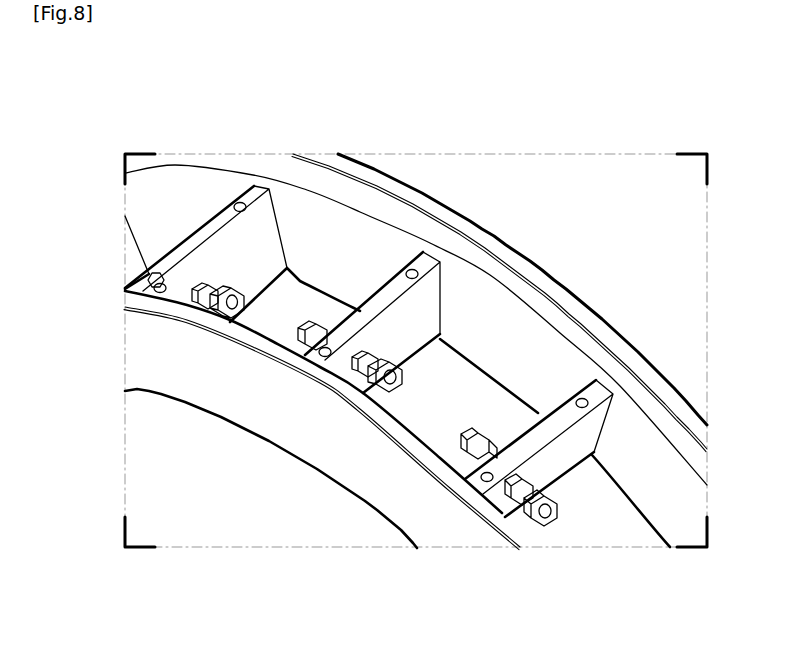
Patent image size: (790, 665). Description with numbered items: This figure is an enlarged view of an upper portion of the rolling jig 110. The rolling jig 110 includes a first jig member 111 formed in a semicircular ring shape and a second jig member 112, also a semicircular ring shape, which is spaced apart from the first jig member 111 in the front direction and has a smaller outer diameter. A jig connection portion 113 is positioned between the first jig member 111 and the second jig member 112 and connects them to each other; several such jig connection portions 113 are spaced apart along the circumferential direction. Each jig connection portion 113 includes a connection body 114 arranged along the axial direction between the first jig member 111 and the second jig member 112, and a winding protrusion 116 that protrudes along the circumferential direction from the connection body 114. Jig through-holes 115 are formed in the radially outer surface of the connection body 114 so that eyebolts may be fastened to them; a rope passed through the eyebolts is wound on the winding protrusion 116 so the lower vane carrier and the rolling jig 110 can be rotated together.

The rolling jig 110 is at (84, 123).
The first jig member 111 is at (487, 260).
The second jig member 112 is at (370, 477).
The jig connection portion 113 is at (262, 81).
The connection body 114 is at (200, 247).
The jig through-hole 115 is at (410, 272).
The winding protrusion 116 is at (238, 293).